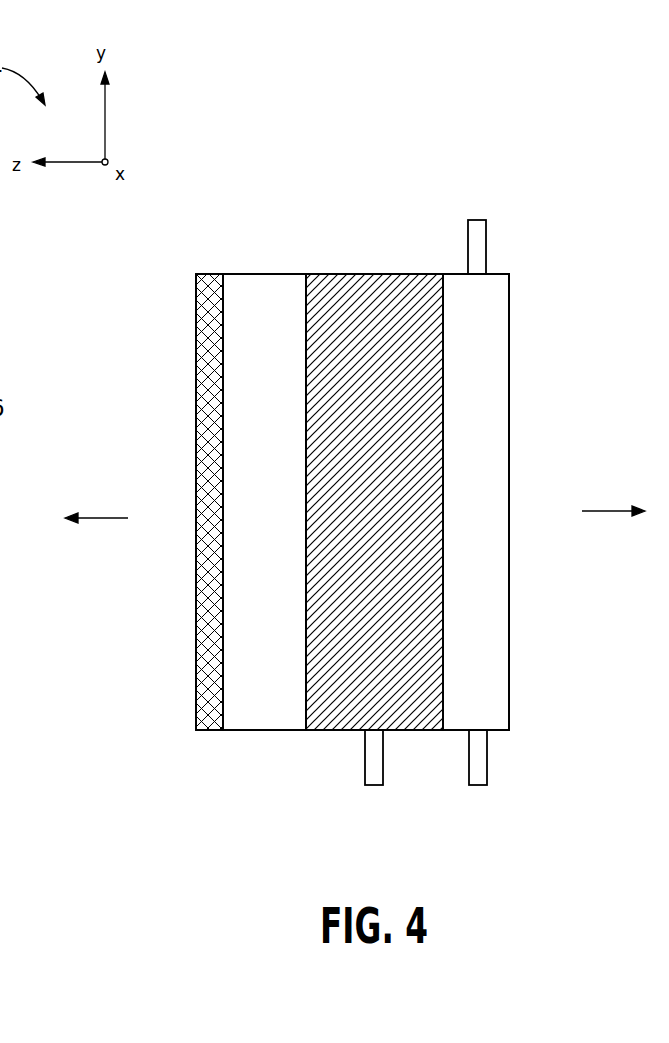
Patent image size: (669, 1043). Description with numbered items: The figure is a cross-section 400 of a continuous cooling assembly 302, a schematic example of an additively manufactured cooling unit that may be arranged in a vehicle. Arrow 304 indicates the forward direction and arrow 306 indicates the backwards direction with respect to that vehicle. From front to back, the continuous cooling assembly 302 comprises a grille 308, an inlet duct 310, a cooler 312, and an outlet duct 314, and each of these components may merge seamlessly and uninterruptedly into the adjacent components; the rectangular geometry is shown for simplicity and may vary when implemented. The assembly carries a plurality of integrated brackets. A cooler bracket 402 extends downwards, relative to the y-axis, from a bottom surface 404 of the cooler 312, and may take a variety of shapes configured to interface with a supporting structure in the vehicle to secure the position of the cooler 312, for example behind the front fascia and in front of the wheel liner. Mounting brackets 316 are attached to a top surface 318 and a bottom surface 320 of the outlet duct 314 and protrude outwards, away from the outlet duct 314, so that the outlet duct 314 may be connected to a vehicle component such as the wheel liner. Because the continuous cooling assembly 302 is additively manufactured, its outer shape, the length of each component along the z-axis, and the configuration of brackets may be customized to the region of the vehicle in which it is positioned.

The cross-section 400 is at (450, 132).
The continuous cooling assembly 302 is at (263, 200).
The arrow 304 is at (103, 517).
The arrow 306 is at (600, 511).
The grille 308 is at (210, 273).
The inlet duct 310 is at (282, 273).
The cooler 312 is at (353, 272).
The outlet duct 314 is at (492, 327).
The mounting brackets 316 is at (487, 245).
The top surface 318 is at (506, 277).
The bottom surface 320 is at (505, 728).
The cooler bracket 402 is at (372, 759).
The bottom surface 404 is at (325, 732).